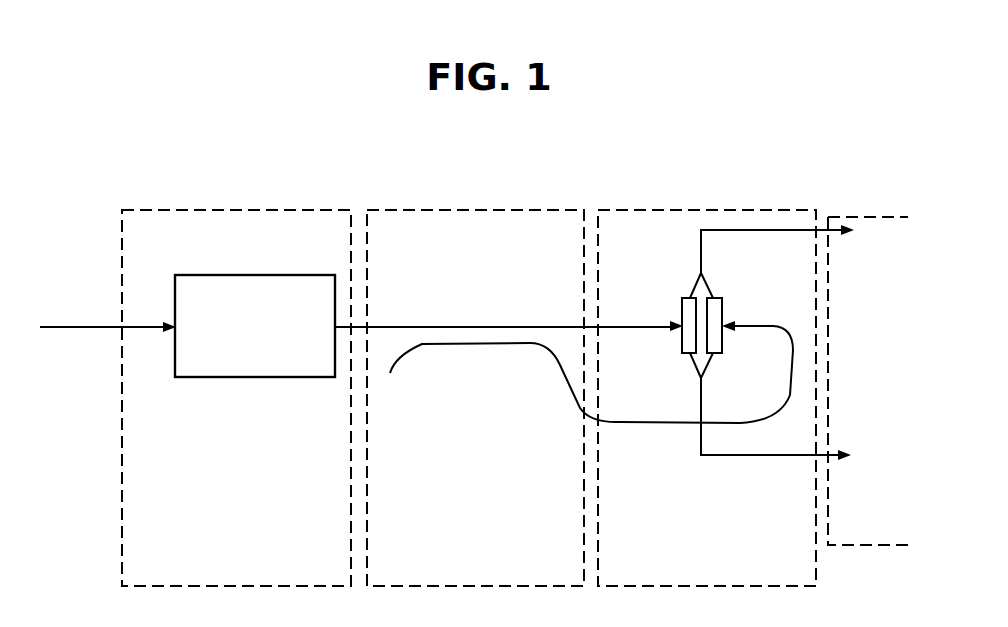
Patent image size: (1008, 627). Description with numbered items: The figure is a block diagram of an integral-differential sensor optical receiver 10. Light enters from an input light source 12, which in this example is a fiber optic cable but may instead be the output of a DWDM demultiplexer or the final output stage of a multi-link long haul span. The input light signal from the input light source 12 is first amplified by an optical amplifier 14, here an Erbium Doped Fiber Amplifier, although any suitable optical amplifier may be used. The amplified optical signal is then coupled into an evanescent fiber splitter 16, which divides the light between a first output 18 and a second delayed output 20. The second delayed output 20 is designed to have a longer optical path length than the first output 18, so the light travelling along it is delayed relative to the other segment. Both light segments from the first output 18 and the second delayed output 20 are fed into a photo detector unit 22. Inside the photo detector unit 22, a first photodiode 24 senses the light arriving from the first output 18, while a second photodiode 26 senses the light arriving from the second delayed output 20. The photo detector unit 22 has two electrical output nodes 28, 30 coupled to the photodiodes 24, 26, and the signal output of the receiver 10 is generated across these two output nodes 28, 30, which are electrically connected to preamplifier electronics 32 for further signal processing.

The integral-differential sensor optical receiver 10 is at (476, 186).
The input light source 12 is at (62, 327).
The optical amplifier 14 is at (275, 275).
The evanescent fiber splitter 16 is at (503, 300).
The first output 18 is at (527, 327).
The second delayed output 20 is at (563, 393).
The photo detector unit 22 is at (758, 210).
The photodiode 24 is at (682, 310).
The photodiode 26 is at (722, 304).
The electrical output node 28 is at (848, 236).
The electrical output node 30 is at (846, 452).
The preamplifier electronics 32 is at (872, 545).